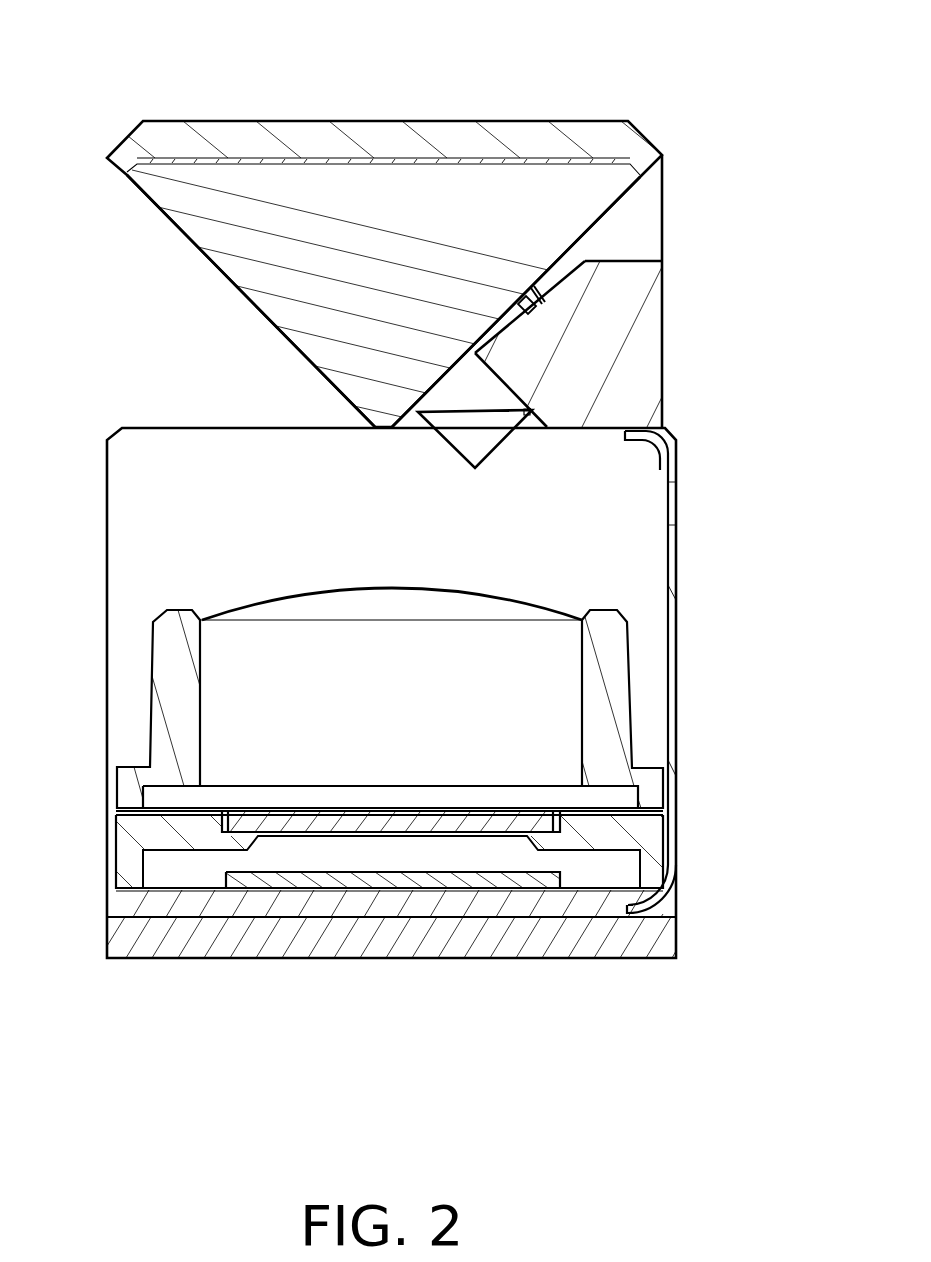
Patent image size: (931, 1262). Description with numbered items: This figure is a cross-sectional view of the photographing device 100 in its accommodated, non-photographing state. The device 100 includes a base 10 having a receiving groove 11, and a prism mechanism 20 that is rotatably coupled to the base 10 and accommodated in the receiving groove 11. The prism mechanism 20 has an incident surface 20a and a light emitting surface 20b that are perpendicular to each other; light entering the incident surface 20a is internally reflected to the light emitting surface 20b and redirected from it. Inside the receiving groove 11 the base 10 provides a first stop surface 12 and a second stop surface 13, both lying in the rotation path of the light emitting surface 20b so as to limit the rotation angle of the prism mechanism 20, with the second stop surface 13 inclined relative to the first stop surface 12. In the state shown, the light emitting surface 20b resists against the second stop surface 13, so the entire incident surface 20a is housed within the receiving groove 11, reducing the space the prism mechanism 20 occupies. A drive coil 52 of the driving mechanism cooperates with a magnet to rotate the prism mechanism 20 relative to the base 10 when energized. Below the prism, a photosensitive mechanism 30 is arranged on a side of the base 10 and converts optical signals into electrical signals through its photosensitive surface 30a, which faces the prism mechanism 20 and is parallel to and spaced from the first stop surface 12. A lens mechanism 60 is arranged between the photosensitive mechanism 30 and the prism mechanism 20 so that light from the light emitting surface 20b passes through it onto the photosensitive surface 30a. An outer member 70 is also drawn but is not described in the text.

The photographing device 100 is at (380, 41).
The prism mechanism 20 is at (408, 140).
The incident surface 20a is at (195, 250).
The light emitting surface 20b is at (555, 263).
The receiving groove 11 is at (651, 191).
The first stop surface 12 is at (640, 262).
The base 10 is at (627, 358).
The second stop surface 13 is at (557, 288).
The drive coil 52 is at (480, 417).
The lens mechanism 60 is at (530, 667).
The shielding cover 70 is at (672, 685).
The photosensitive surface 30a is at (493, 822).
The photosensitive mechanism 30 is at (640, 837).